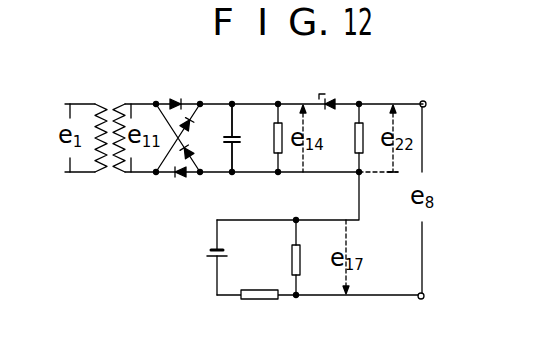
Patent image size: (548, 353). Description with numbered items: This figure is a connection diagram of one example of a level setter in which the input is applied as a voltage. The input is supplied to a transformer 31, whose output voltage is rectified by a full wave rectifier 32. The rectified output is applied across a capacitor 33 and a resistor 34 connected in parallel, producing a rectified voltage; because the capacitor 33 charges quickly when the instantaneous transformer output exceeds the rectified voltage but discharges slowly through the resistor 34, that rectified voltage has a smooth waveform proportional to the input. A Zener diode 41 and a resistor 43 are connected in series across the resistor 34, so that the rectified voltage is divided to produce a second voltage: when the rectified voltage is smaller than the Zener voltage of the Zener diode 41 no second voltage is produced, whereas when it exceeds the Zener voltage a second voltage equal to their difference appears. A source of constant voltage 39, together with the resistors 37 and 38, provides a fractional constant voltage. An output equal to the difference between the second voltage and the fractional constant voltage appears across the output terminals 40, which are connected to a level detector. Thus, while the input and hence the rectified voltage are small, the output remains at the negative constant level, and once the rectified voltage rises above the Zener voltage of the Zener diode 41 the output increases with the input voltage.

The transformer 31 is at (113, 103).
The full wave rectifier 32 is at (176, 100).
The capacitor 33 is at (224, 138).
The resistor 34 is at (273, 135).
The Zener diode 41 is at (330, 99).
The resistor 43 is at (353, 139).
The output terminals 40 is at (438, 104).
The source of constant voltage 39 is at (209, 252).
The resistor 37 is at (291, 259).
The resistor 38 is at (255, 300).